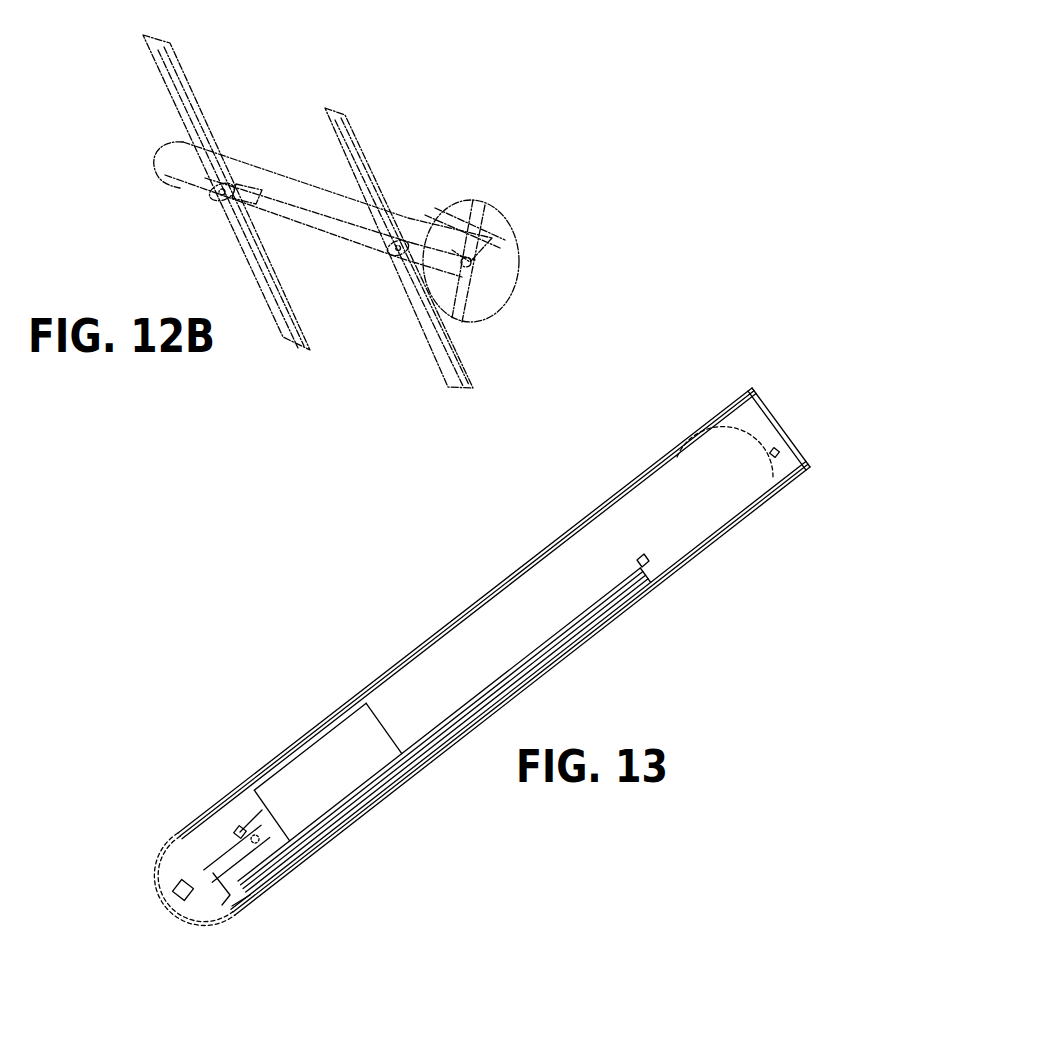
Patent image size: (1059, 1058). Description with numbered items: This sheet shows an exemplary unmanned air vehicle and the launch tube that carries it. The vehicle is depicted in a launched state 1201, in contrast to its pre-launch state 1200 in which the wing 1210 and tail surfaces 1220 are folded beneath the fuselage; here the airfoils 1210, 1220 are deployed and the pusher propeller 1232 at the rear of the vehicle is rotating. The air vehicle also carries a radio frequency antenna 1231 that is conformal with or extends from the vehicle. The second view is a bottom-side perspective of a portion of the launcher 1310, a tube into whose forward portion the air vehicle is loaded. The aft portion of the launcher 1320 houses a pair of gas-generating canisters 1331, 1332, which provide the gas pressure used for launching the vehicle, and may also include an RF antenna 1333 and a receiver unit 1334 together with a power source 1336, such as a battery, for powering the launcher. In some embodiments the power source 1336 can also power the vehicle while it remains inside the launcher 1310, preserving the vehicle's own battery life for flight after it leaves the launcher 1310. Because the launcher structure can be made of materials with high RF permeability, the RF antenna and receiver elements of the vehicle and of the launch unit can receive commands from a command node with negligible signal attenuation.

In FIG. 13, the pre-launch state 1200 is at (672, 470).
In FIG. 12B, the launched state 1201 is at (252, 81).
In FIG. 12B, the wing 1210 is at (193, 128).
In FIG. 12B, the tail surfaces 1220 is at (378, 378).
In FIG. 12B, the radio frequency antenna 1231 is at (197, 213).
In FIG. 12B, the pusher propeller 1232 is at (590, 228).
In FIG. 13, the launcher 1310 is at (494, 651).
In FIG. 13, the aft portion of the launcher 1320 is at (198, 821).
In FIG. 13, the gas-generating canister 1331 is at (213, 873).
In FIG. 13, the gas-generating canister 1332 is at (243, 903).
In FIG. 13, the RF antenna 1333 is at (258, 800).
In FIG. 13, the receiver unit 1334 is at (234, 832).
In FIG. 13, the power source 1336 is at (174, 892).